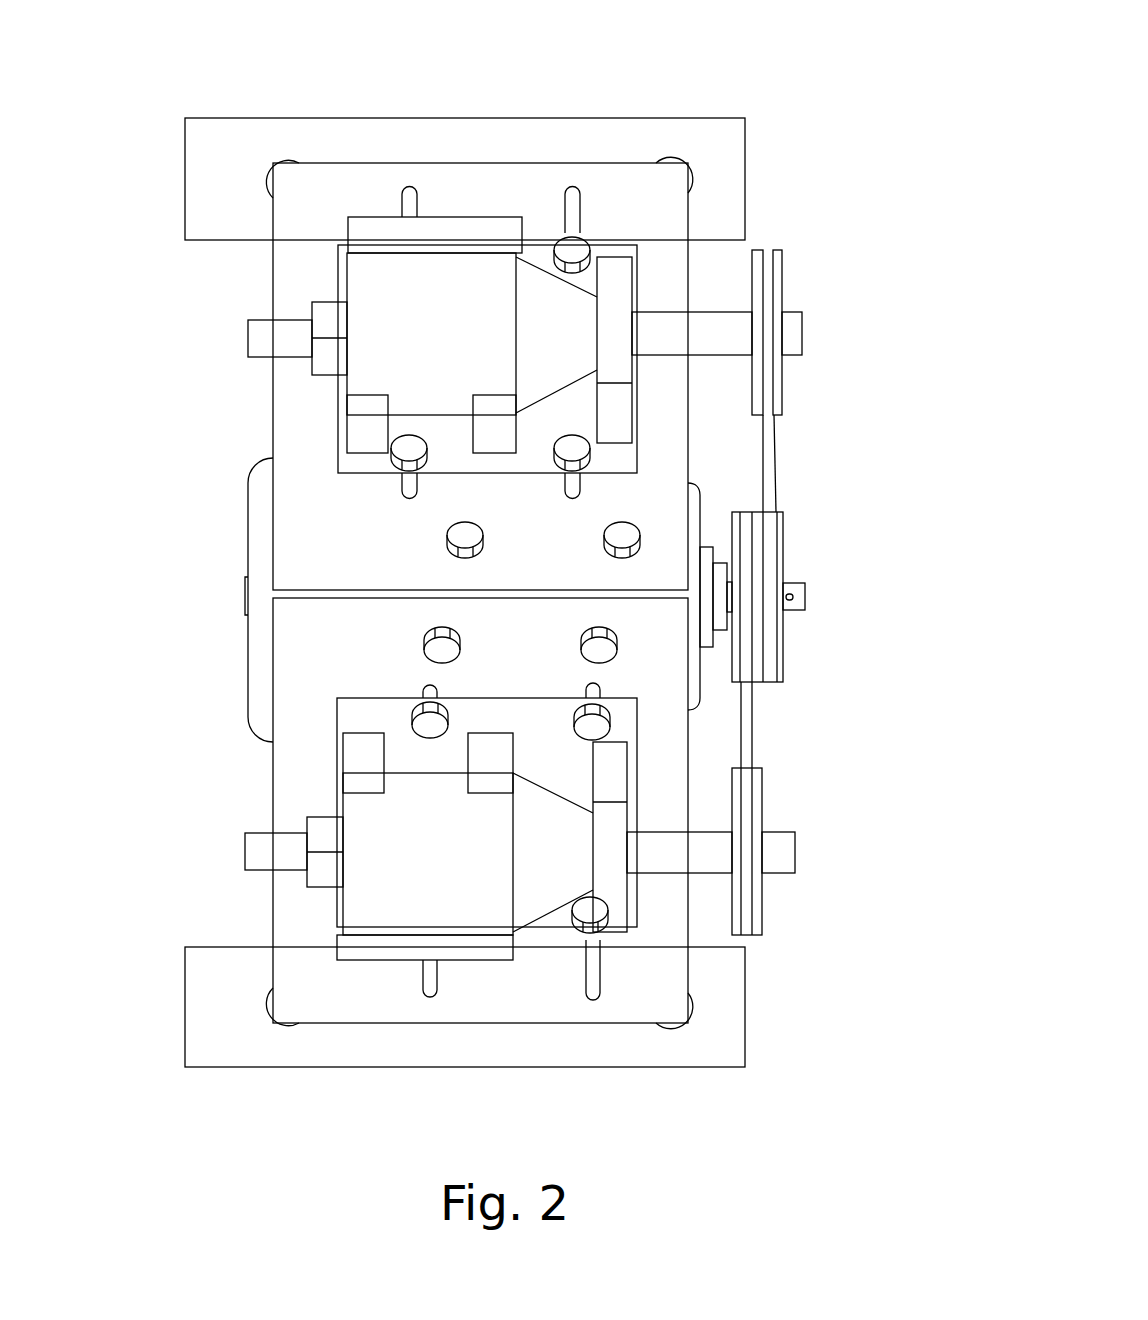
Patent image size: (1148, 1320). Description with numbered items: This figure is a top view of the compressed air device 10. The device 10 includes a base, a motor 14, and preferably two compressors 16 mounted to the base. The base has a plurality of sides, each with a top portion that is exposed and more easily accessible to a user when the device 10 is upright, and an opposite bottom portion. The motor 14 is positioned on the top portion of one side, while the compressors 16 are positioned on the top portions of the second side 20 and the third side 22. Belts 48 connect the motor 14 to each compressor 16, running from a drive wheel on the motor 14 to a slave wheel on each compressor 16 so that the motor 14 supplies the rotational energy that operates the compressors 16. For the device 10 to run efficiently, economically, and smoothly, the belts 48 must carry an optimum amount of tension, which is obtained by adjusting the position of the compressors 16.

The compressed air device 10 is at (760, 78).
The motor 14 is at (262, 545).
The compressor 16 is at (380, 295).
The second side 20 is at (482, 998).
The third side 22 is at (509, 188).
The belt 48 is at (767, 468).